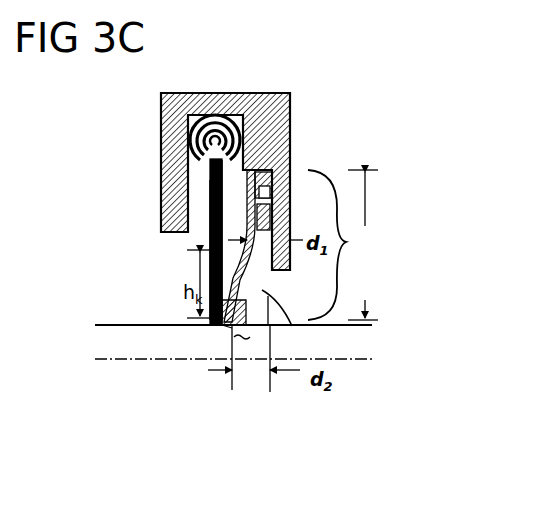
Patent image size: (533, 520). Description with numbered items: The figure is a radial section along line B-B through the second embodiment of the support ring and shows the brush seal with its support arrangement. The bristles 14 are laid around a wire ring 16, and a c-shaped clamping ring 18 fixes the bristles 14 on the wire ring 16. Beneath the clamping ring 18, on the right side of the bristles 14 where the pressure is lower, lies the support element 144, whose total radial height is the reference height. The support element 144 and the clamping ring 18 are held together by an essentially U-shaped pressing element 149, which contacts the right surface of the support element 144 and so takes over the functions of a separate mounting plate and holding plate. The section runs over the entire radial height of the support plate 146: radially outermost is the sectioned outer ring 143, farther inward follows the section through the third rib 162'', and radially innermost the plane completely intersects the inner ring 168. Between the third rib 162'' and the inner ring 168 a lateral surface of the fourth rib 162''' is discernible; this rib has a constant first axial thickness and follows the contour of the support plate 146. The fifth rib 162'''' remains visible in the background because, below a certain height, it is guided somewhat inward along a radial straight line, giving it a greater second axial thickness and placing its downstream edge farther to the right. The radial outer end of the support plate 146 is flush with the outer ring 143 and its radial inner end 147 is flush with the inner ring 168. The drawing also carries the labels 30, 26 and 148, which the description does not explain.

The pressing element 149 is at (262, 100).
The clamping ring 18 is at (194, 134).
The wire ring 16 is at (190, 151).
The bristles 14 is at (210, 171).
The support plate 146 is at (206, 260).
The outer ring 143 is at (250, 178).
The third rib 162'' is at (167, 246).
The inner ring 168 is at (206, 315).
The fourth rib 162''' is at (293, 302).
The fifth rib 162'''' is at (307, 380).
The workpiece surface 30 is at (118, 319).
The center line 26 is at (233, 347).
The radial inner end of the support plate 147 is at (232, 328).
The contact point 148 is at (232, 350).
The support element 144 is at (350, 245).